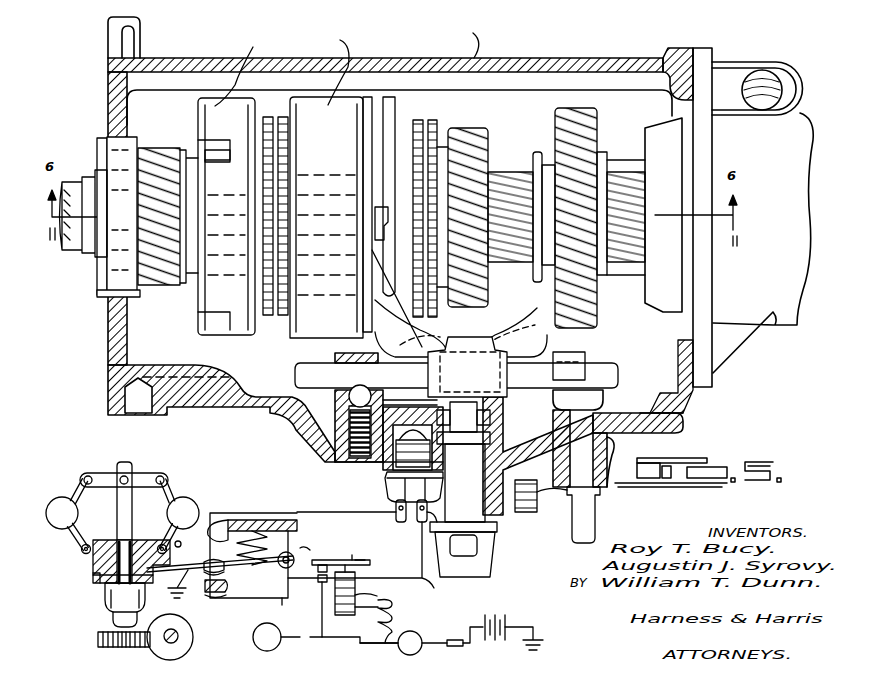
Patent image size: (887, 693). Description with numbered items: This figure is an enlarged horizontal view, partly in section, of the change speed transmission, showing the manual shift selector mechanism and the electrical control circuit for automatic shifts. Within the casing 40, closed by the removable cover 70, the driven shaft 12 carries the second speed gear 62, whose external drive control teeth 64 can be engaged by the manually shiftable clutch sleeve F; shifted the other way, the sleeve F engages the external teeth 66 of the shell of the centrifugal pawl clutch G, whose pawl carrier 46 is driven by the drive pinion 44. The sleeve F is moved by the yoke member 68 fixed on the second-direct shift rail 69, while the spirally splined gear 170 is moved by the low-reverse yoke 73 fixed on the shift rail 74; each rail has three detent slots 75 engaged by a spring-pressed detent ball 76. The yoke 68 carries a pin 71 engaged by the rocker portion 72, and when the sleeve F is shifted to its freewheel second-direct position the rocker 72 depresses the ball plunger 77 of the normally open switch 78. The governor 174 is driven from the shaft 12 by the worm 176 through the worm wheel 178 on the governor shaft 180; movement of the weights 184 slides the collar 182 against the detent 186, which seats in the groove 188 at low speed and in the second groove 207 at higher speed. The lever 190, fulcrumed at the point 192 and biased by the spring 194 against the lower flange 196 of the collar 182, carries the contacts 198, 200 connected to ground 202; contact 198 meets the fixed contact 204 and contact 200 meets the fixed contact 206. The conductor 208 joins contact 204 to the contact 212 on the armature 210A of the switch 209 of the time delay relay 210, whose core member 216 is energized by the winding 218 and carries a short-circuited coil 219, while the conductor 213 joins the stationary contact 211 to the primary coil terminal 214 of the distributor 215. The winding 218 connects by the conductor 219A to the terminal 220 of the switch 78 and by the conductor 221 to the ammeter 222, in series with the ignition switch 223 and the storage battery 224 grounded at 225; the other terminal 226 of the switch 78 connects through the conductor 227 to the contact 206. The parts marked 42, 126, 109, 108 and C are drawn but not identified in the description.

The input shaft sleeve 42 is at (102, 140).
The drive pinion 44 is at (166, 290).
The pawl carrier 46 is at (198, 110).
The external clutch teeth 66 is at (263, 125).
The pawl 126 is at (212, 165).
The yoke member 68 is at (362, 326).
The gear hub 109 is at (294, 127).
The clutch plate 108 is at (420, 120).
The external clutch teeth 64 is at (433, 126).
The second speed gear 62 is at (468, 128).
The driven shaft 12 is at (506, 262).
The gear 170 is at (598, 107).
The shift rail 74 is at (297, 368).
The low-reverse yoke 73 is at (512, 340).
The detent slots 75 is at (310, 378).
The spring-pressed detent ball 76 is at (372, 396).
The ball plunger 77 is at (412, 433).
The pin 71 is at (463, 417).
The rocker portion 72 is at (484, 421).
The normally open switch 78 is at (385, 486).
The conductor 219A is at (392, 559).
The terminal 226 is at (396, 512).
The terminal 220 is at (446, 513).
The conductor 227 is at (318, 486).
The second-direct shift rail 69 is at (590, 366).
The casing 40 is at (690, 398).
The removable cover 70 is at (685, 426).
The governor 174 is at (176, 474).
The governor shaft 180 is at (118, 504).
The weights 184 is at (200, 504).
The collar 182 is at (93, 566).
The lower flange 196 is at (96, 582).
The detent 186 is at (107, 591).
The second groove 207 is at (111, 613).
The worm wheel 178 is at (98, 640).
The groove 188 is at (138, 647).
The worm 176 is at (194, 634).
The primary coil terminal 214 is at (274, 630).
The distributor 215 is at (262, 645).
The lever 190 is at (163, 566).
The fixed switch contact 206 is at (176, 542).
The switch 209 is at (288, 568).
The switch contact 200 is at (226, 518).
The spring 194 is at (262, 541).
The switch contact 198 is at (222, 576).
The fixed switch contact 204 is at (230, 589).
The ground 202 is at (212, 600).
The conductor 208 is at (282, 598).
The fulcrum point 192 is at (302, 548).
The contact 212 is at (334, 549).
The measured time delay relay 210 is at (352, 556).
The armature 210A is at (360, 560).
The core member 216 is at (357, 584).
The short-circuited coil 219 is at (366, 567).
The winding 218 is at (388, 603).
The stationary contact 211 is at (322, 630).
The conductor 213 is at (320, 640).
The ammeter 222 is at (412, 631).
The conductor 221 is at (358, 646).
The ignition switch 223 is at (460, 647).
The storage battery 224 is at (508, 618).
The ground 225 is at (541, 644).
The centrifugal pawl clutch G is at (240, 71).
The clutch sleeve F is at (338, 68).
The housing C is at (464, 41).